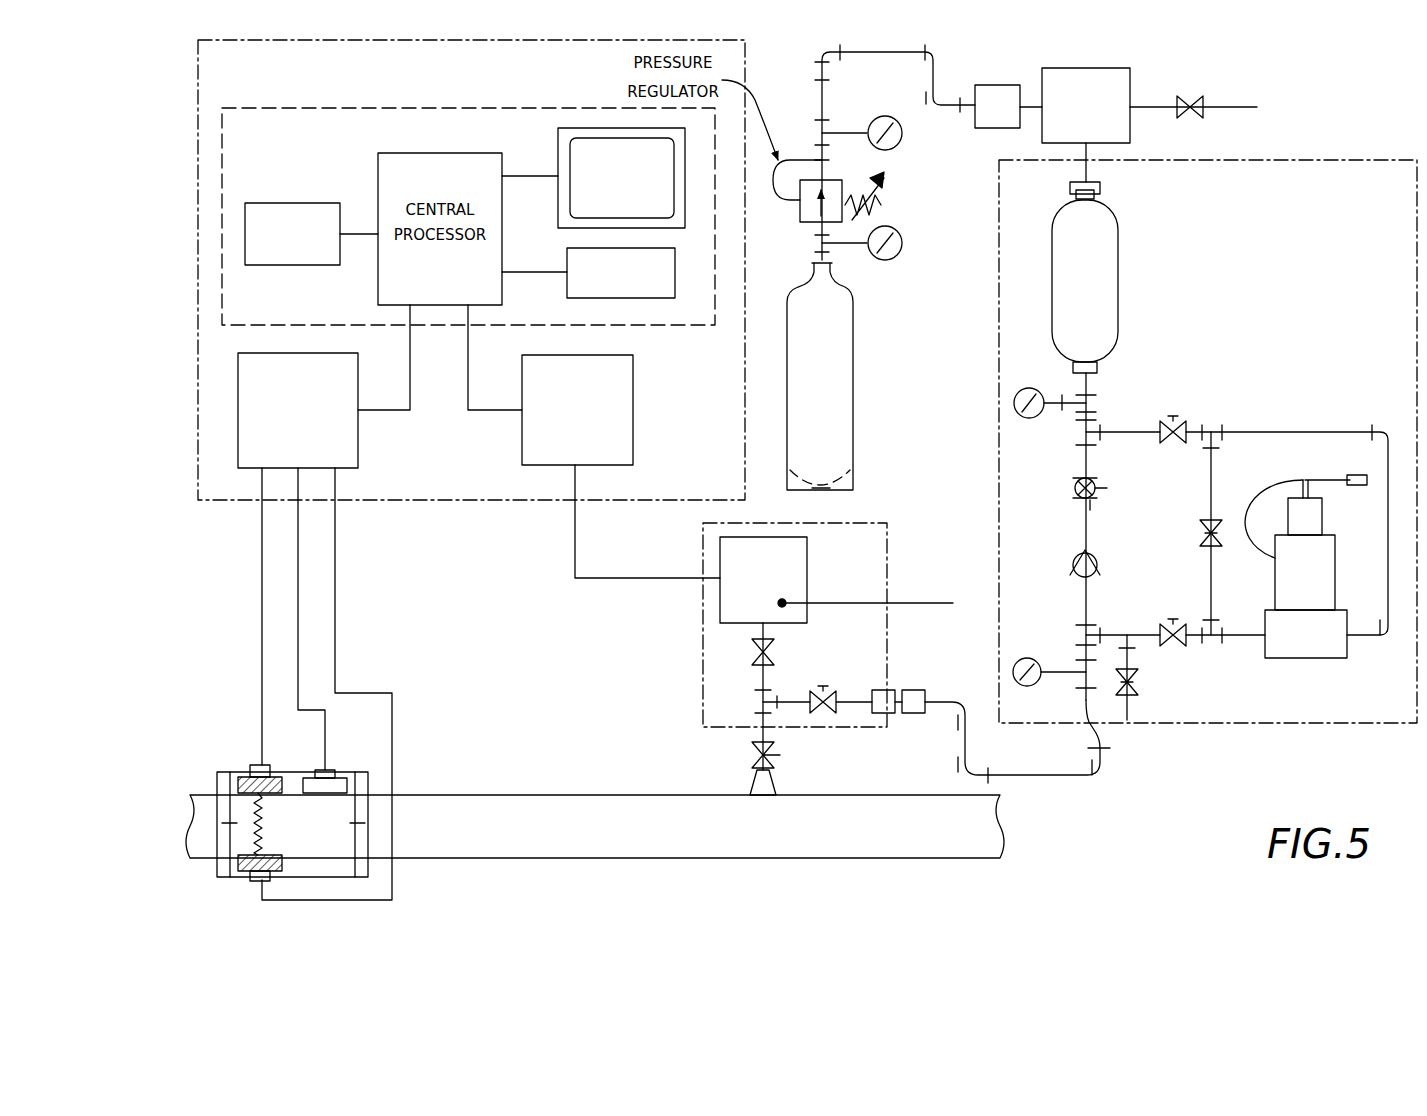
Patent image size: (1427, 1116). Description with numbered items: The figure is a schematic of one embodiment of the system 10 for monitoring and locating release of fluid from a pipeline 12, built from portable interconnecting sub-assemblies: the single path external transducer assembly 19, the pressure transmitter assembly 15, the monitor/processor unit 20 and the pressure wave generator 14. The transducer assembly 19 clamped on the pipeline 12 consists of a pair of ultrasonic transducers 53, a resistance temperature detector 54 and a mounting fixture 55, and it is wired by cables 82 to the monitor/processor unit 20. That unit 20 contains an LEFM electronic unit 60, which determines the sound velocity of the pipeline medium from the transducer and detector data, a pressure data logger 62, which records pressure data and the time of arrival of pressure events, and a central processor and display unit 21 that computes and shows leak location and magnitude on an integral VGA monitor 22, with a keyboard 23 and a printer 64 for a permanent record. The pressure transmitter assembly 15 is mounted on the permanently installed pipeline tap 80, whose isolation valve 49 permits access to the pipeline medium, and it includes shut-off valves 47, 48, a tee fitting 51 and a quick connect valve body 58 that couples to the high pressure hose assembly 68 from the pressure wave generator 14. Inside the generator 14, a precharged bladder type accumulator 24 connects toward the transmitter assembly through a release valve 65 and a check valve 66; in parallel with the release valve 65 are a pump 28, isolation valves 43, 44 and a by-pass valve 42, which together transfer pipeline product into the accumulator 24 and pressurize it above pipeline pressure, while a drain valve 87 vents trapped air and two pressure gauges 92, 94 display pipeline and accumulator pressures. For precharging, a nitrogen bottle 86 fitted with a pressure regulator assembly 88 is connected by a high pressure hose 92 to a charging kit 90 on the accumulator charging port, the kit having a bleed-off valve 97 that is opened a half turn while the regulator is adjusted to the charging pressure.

The system 10 is at (735, 550).
The pipeline 12 is at (540, 780).
The pressure wave generator 14 is at (1367, 150).
The pressure transmitter assembly 15 is at (893, 520).
The single path external transducer assembly 19 is at (218, 760).
The monitor/processor unit 20 is at (195, 200).
The central processor and display unit 21 is at (265, 125).
The VGA monitor 22 is at (558, 162).
The keyboard 23 is at (640, 298).
The bladder type accumulator 24 is at (1135, 245).
The pump 28 is at (1347, 598).
The by-pass valve 42 is at (1205, 525).
The valve 43 is at (1192, 650).
The isolation valve 44 is at (1190, 420).
The shut-off valve 47 is at (740, 645).
The shut-off valve 48 is at (840, 715).
The isolation valve 49 is at (788, 758).
The tee fitting 51 is at (752, 700).
The ultrasonic transducers 53 is at (250, 765).
The resistance temperature detector 54 is at (342, 773).
The mounting fixture 55 is at (212, 810).
The quick connect valve body 58 is at (912, 685).
The LEFM electronic unit 60 is at (238, 388).
The pressure data logger 62 is at (520, 440).
The printer 64 is at (300, 266).
The release valve 65 is at (1072, 492).
The check valve 66 is at (1105, 568).
The high pressure hose assembly 68 is at (1120, 780).
The pipeline tap 80 is at (748, 790).
The cables 82 is at (340, 603).
The nitrogen bottle 86 is at (845, 375).
The drain valve 87 is at (1150, 690).
The pressure regulator assembly 88 is at (778, 168).
The charging kit 90 is at (1137, 75).
The pressure gauge 92 is at (965, 125).
The pressure gauge 94 is at (1015, 392).
The bleed-off valve 97 is at (1200, 95).